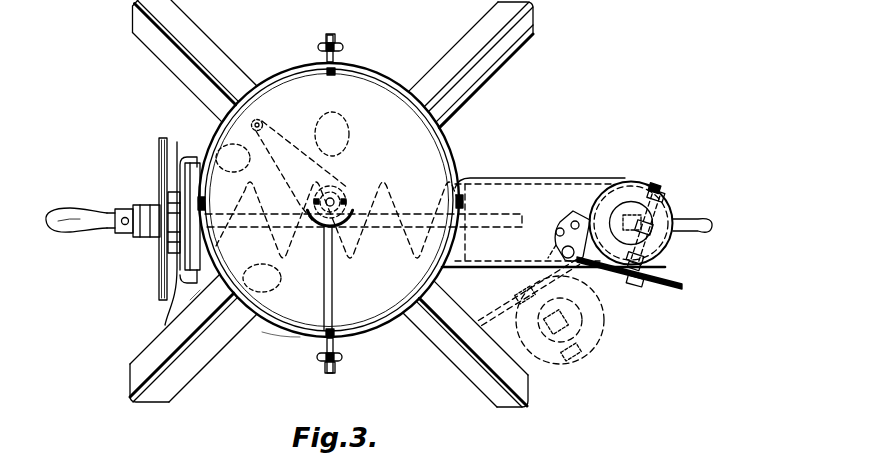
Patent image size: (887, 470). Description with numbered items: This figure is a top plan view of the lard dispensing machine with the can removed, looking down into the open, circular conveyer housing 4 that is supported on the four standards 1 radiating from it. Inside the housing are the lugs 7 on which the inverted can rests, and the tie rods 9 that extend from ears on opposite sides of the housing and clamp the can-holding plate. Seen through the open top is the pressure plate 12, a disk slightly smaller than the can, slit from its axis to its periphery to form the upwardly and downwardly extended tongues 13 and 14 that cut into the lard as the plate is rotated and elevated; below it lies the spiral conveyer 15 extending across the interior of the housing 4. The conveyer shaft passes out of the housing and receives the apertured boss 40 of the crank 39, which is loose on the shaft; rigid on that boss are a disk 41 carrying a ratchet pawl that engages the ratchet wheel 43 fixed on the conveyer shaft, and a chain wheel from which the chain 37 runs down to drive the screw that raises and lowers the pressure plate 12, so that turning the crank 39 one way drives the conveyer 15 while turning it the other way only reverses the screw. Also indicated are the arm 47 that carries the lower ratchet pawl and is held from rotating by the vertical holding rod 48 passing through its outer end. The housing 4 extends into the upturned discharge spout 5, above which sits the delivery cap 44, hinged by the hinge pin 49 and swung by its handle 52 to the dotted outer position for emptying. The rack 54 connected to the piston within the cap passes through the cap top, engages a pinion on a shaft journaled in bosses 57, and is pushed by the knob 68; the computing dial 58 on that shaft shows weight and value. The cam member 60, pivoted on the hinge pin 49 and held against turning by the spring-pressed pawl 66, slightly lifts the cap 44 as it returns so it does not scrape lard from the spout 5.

The standards 1 is at (163, 50).
The conveyer housing 4 is at (280, 334).
The discharge spout 5 is at (524, 178).
The lugs 7 is at (330, 76).
The tie rods 9 is at (343, 47).
The pressure plate 12 is at (329, 200).
The upwardly extended tongue 13 is at (323, 286).
The downwardly extended tongue 14 is at (333, 288).
The spiral conveyer 15 is at (398, 197).
The chain 37 is at (158, 292).
The crank 39 is at (77, 222).
The apertured boss 40 is at (147, 205).
The disk 41 is at (177, 142).
The ratchet wheel 43 is at (172, 325).
The delivery cap 44 is at (675, 247).
The arm 47 is at (315, 165).
The vertical holding rod 48 is at (255, 132).
The hinge pin 49 is at (563, 253).
The handle 52 is at (700, 218).
The rack 54 is at (634, 287).
The bosses 57 is at (663, 193).
The computing dial 58 is at (682, 290).
The cam member 60 is at (580, 264).
The pawl 66 is at (563, 226).
The knob 68 is at (626, 210).